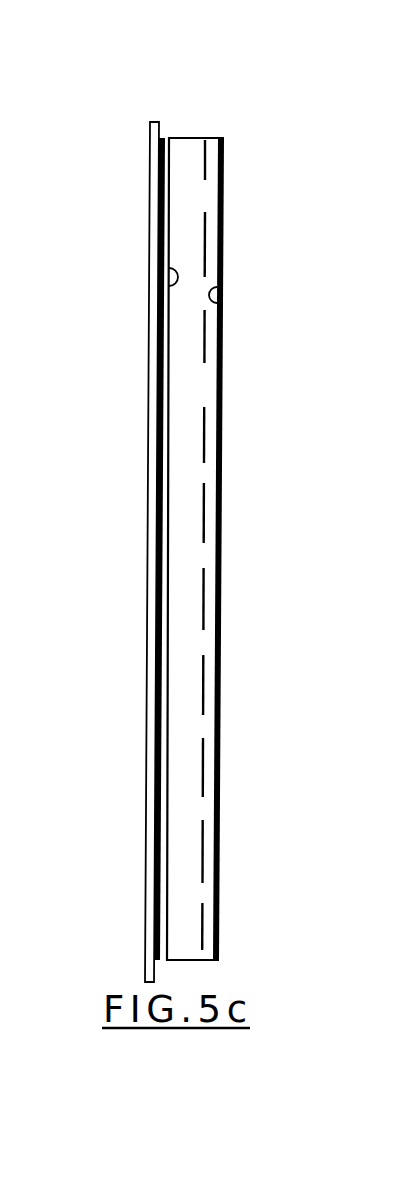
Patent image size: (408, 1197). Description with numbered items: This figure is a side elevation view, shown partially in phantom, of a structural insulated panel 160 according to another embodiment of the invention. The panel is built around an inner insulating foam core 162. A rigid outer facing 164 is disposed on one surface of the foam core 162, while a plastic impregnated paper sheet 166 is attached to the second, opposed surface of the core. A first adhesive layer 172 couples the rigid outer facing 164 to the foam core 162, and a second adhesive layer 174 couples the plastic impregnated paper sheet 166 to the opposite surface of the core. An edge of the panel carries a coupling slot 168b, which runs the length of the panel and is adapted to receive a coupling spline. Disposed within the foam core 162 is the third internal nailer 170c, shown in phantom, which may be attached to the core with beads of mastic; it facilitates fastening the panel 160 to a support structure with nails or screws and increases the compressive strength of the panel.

The structural insulated panel 160 is at (128, 585).
The inner insulating foam core 162 is at (192, 145).
The rigid outer facing 164 is at (153, 145).
The plastic impregnated paper sheet 166 is at (224, 210).
The coupling slot 168b is at (167, 145).
The third internal nailer 170c is at (203, 435).
The first adhesive layer 172 is at (170, 292).
The second adhesive layer 174 is at (218, 287).